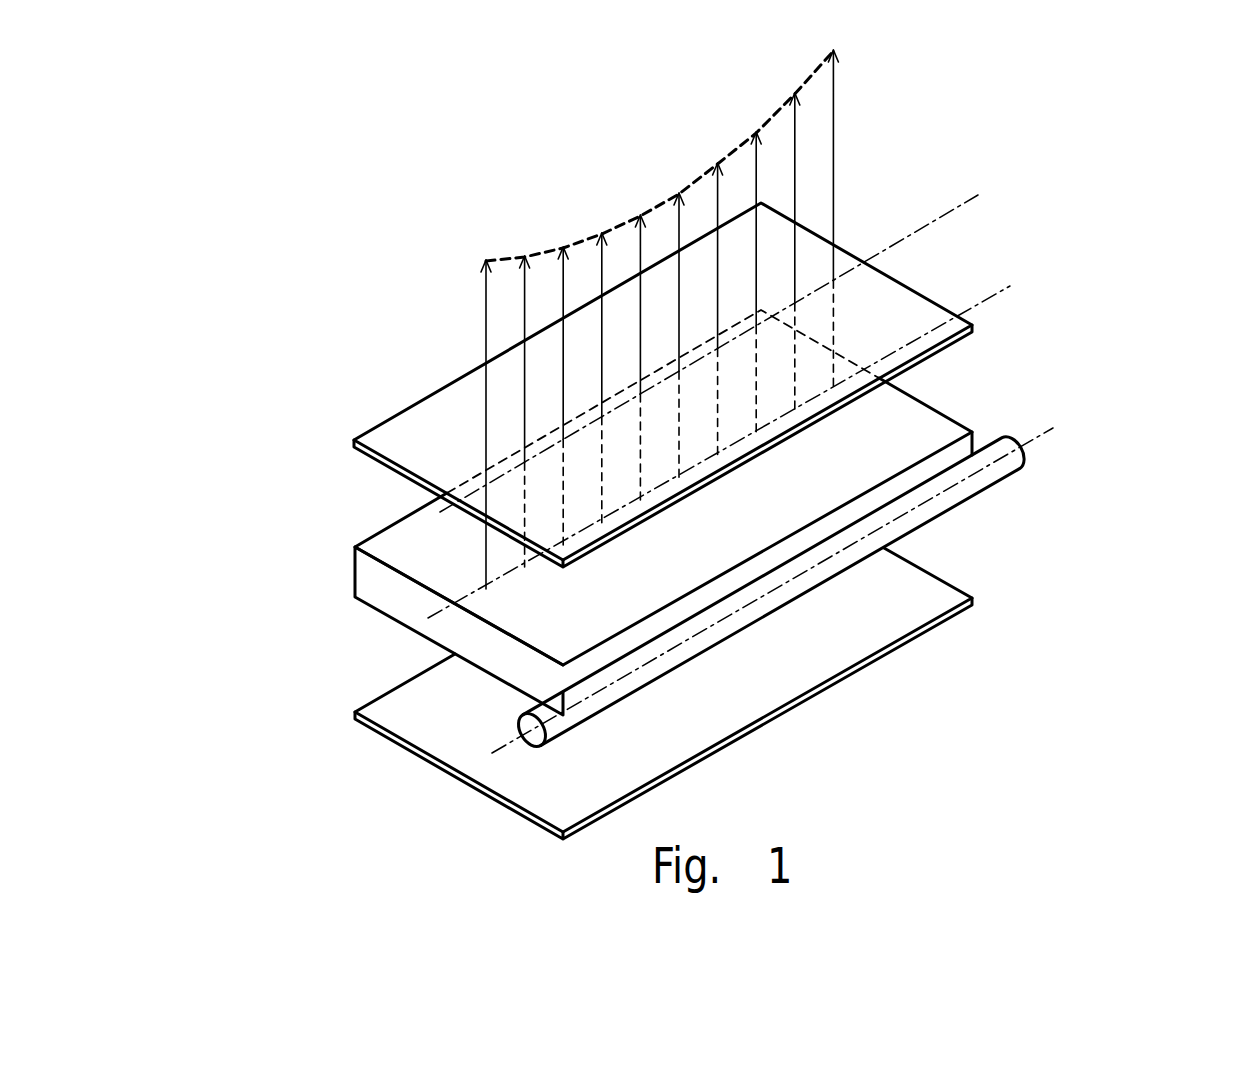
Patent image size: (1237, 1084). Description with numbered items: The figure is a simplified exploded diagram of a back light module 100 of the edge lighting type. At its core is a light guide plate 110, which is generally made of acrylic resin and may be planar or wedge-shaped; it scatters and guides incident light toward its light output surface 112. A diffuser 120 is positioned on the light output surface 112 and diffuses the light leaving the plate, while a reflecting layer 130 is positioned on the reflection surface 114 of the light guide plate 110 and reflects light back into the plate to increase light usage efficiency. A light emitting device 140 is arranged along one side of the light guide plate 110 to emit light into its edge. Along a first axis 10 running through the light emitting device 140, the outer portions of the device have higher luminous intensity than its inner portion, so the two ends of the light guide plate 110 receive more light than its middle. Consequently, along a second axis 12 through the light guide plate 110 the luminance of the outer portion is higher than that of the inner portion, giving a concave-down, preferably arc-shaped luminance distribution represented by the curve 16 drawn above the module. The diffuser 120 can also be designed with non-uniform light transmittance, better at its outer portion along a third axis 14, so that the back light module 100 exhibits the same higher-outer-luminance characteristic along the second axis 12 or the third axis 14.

The back light module 100 is at (318, 252).
The light guide plate 110 is at (355, 565).
The light output surface 112 is at (398, 543).
The reflection surface 114 is at (453, 633).
The diffuser 120 is at (392, 433).
The reflecting layer 130 is at (405, 720).
The light emitting device 140 is at (986, 489).
The first axis 10 is at (1052, 430).
The second axis 12 is at (1010, 287).
The third axis 14 is at (978, 195).
The curve 16 is at (548, 253).